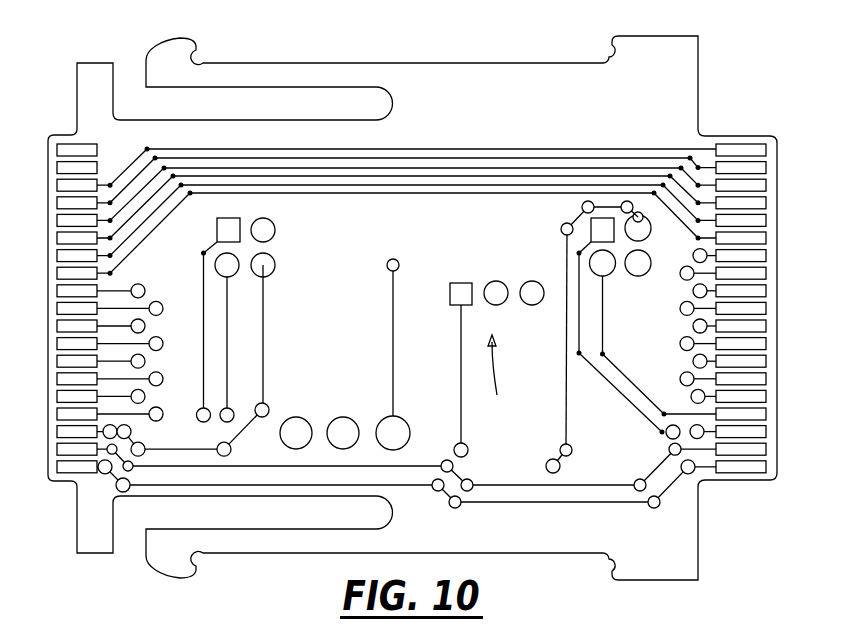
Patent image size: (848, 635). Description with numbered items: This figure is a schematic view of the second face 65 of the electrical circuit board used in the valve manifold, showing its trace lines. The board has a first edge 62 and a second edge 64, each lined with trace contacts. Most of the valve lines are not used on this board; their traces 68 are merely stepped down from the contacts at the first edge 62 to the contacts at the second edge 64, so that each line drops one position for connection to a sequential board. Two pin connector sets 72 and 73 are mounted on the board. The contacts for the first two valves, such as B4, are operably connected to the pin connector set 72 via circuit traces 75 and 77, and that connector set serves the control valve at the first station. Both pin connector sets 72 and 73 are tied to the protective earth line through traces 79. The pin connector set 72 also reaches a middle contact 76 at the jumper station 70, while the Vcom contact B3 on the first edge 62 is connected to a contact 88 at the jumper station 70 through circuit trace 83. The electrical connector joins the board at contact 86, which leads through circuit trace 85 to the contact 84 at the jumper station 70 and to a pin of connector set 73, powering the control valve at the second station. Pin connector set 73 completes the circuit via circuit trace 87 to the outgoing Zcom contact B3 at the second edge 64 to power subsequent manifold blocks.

The first edge 62 is at (760, 136).
The second edge 64 is at (49, 157).
The face of the board 65 is at (478, 245).
The traces 68 is at (530, 168).
The jumper station 70 is at (497, 378).
The pin connector set 72 is at (647, 244).
The pin connector set 73 is at (275, 246).
The circuit trace 75 is at (636, 408).
The middle contact 76 is at (495, 282).
The circuit trace 77 is at (623, 373).
The traces 79 is at (566, 248).
The circuit trace 83 is at (460, 363).
The contact 84 is at (532, 305).
The circuit trace 85 is at (390, 343).
The contact 86 is at (395, 430).
The circuit trace 87 is at (266, 356).
The contact 88 is at (450, 291).
The trace contact B3 is at (66, 432).
The trace contact B4 is at (766, 414).